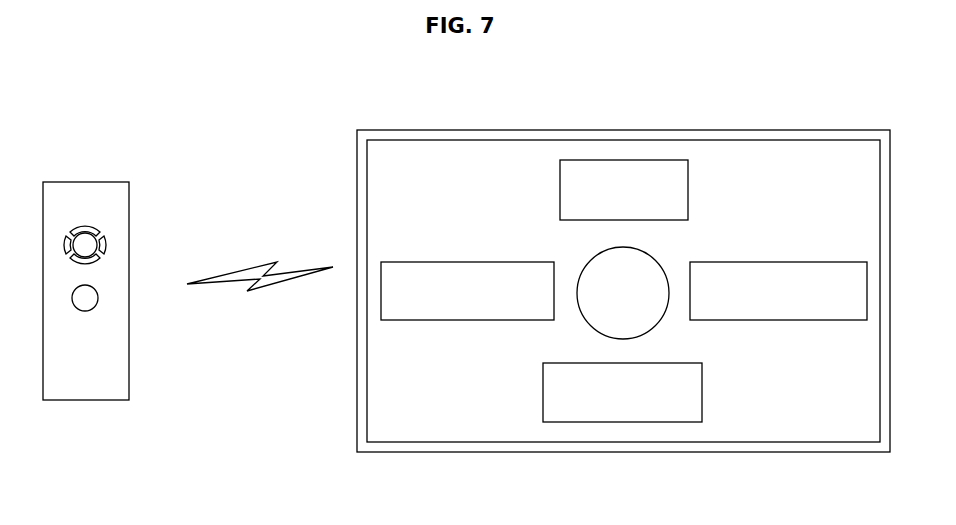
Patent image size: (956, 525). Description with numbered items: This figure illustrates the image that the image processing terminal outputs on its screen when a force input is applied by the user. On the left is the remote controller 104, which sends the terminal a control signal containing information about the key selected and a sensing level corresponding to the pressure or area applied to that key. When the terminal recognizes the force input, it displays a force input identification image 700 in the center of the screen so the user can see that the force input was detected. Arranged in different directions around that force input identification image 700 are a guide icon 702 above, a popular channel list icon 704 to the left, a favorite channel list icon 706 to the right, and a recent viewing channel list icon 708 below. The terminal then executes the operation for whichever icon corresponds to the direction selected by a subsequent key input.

The remote controller 104 is at (85, 182).
The force input identification image 700 is at (660, 322).
The guide icon 702 is at (620, 160).
The popular channel list icon 704 is at (466, 262).
The favorite channel list icon 706 is at (783, 262).
The recent viewing channel list icon 708 is at (622, 422).